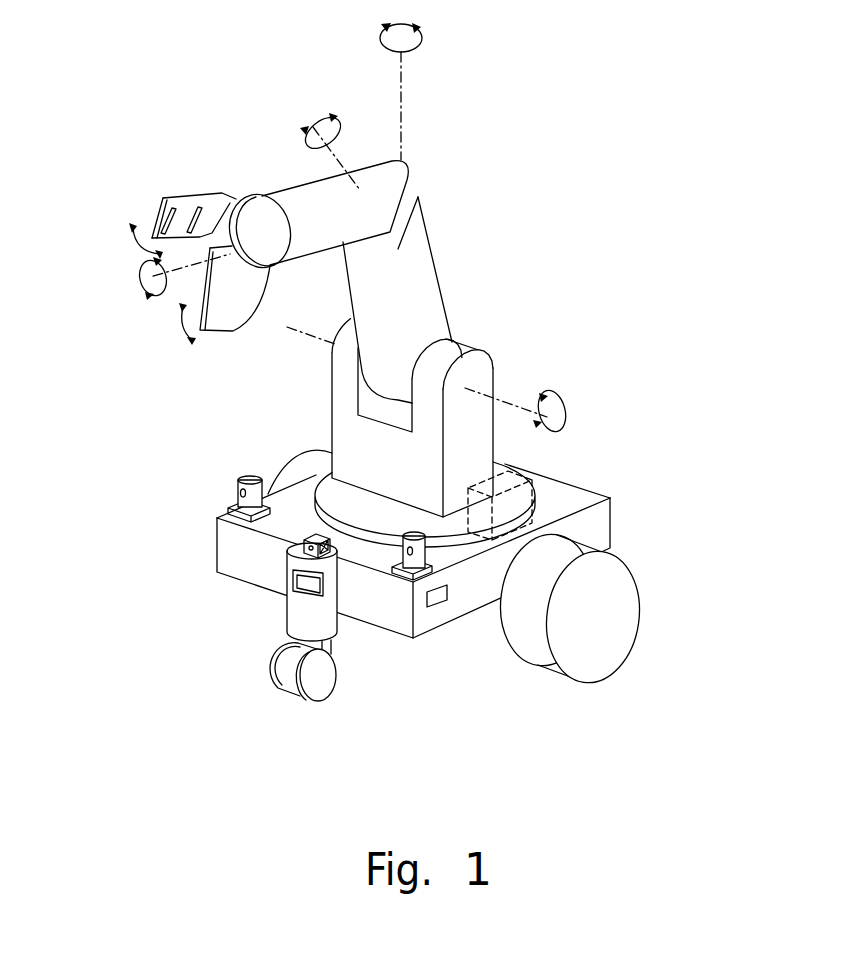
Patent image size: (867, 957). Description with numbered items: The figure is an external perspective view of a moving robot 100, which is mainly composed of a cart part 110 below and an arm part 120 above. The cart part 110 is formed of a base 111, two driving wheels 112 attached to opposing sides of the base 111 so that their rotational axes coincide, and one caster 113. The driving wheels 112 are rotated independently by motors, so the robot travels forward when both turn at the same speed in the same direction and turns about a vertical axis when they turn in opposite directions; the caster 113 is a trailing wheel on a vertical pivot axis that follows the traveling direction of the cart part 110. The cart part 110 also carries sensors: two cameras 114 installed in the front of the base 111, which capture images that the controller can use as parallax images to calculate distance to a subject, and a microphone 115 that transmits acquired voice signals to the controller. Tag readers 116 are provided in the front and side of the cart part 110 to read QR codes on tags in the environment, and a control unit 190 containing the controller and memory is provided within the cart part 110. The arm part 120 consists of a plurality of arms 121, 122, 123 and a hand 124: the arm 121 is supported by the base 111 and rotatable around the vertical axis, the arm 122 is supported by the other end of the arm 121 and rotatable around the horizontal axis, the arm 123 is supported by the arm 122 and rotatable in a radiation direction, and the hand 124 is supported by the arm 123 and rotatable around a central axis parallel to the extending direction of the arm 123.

The moving robot 100 is at (86, 50).
The cart part 110 is at (447, 580).
The base 111 is at (223, 545).
The driving wheel 112 is at (296, 461).
The caster 113 is at (318, 682).
The camera 114 is at (245, 477).
The microphone 115 is at (304, 548).
The tag reader 116 is at (312, 597).
The arm part 120 is at (450, 270).
The arm 121 is at (481, 368).
The arm 122 is at (424, 270).
The arm 123 is at (290, 199).
The hand 124 is at (181, 192).
The control unit 190 is at (527, 464).